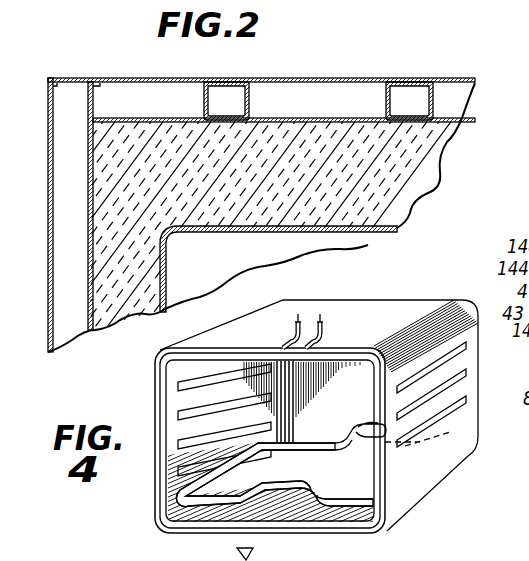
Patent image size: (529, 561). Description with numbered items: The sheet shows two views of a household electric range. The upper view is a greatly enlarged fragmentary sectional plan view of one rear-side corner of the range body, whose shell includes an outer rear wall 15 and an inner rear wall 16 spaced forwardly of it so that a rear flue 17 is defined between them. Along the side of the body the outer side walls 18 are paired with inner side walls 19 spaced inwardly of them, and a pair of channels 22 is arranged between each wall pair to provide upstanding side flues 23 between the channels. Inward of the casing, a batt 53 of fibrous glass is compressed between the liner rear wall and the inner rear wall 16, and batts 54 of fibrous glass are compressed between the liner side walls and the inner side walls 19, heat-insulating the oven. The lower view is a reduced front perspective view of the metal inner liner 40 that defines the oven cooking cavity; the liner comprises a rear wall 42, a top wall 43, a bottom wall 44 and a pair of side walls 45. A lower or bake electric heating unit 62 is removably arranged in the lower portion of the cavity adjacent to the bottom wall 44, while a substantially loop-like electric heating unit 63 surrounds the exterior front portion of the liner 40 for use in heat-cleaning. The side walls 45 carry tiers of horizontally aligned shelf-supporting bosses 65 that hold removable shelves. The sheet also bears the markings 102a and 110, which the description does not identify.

In FIG. 2, the outer rear wall 15 is at (48, 273).
In FIG. 2, the inner rear wall 16 is at (88, 195).
In FIG. 2, the rear flue 17 is at (78, 323).
In FIG. 2, the outer side walls 18 is at (297, 80).
In FIG. 2, the inner side walls 19 is at (293, 121).
In FIG. 2, the channels 22 is at (200, 96).
In FIG. 2, the side flues 23 is at (237, 113).
In FIG. 2, the liner 40 is at (306, 248).
In FIG. 4, the liner 40 is at (359, 317).
In FIG. 2, the rear wall 42 is at (167, 282).
In FIG. 4, the rear wall 42 is at (354, 442).
In FIG. 4, the top wall 43 is at (278, 341).
In FIG. 2, the bottom wall 44 is at (227, 273).
In FIG. 4, the bottom wall 44 is at (306, 528).
In FIG. 2, the side walls 45 is at (238, 230).
In FIG. 4, the side walls 45 is at (167, 401).
In FIG. 2, the batt 53 is at (118, 323).
In FIG. 2, the batts 54 is at (420, 158).
In FIG. 4, the lower or bake electric heating unit 62 is at (268, 488).
In FIG. 4, the loop-like electric heating unit 63 is at (368, 350).
In FIG. 4, the shelf-supporting bosses 65 is at (183, 451).
In FIG. 4, the section indicator 102a is at (237, 553).
In FIG. 4, the housing 110 is at (432, 554).